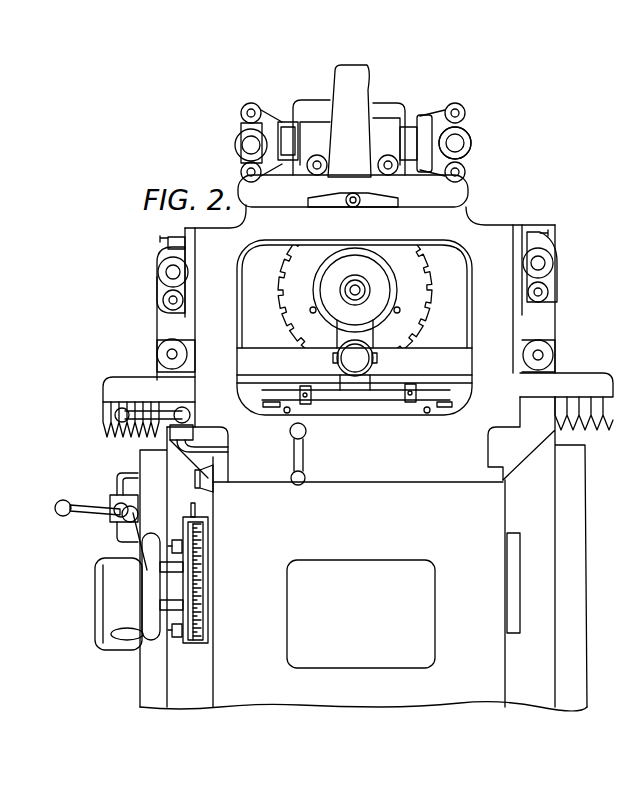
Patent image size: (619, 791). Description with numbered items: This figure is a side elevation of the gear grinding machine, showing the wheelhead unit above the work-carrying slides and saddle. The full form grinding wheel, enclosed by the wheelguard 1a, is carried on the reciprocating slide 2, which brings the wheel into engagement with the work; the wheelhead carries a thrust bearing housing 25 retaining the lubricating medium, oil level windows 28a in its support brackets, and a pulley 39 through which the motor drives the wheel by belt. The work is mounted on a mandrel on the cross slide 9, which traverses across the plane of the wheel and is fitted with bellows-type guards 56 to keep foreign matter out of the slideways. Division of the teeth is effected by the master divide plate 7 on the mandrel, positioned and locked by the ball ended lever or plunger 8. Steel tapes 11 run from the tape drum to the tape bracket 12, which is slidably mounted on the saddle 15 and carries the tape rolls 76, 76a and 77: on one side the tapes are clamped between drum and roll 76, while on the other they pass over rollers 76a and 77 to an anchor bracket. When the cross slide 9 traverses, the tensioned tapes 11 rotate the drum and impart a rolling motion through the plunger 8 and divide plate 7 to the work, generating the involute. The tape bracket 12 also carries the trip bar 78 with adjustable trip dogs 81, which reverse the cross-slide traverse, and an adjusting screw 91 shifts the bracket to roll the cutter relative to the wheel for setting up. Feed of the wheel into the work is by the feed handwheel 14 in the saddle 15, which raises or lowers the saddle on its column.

The wheelguard 1a is at (355, 95).
The reciprocating slide 2 is at (432, 107).
The master divide plate 7 is at (430, 316).
The ball ended lever or plunger 8 is at (388, 200).
The cross slide 9 is at (143, 383).
The steel tapes 11 is at (437, 251).
The tape bracket 12 is at (361, 343).
The feed handwheel 14 is at (147, 603).
The saddle 15 is at (122, 682).
The thrust bearing housing 25 is at (285, 126).
The oil level windows 28a is at (390, 134).
The pulley 39 is at (463, 128).
The bellows-type guards 56 is at (105, 418).
The tape roll 76 is at (553, 261).
The tape roll 76a is at (162, 260).
The tape roll 77 is at (160, 354).
The trip bar 78 is at (372, 408).
The trip dogs 81 is at (412, 387).
The adjusting screw 91 is at (194, 487).